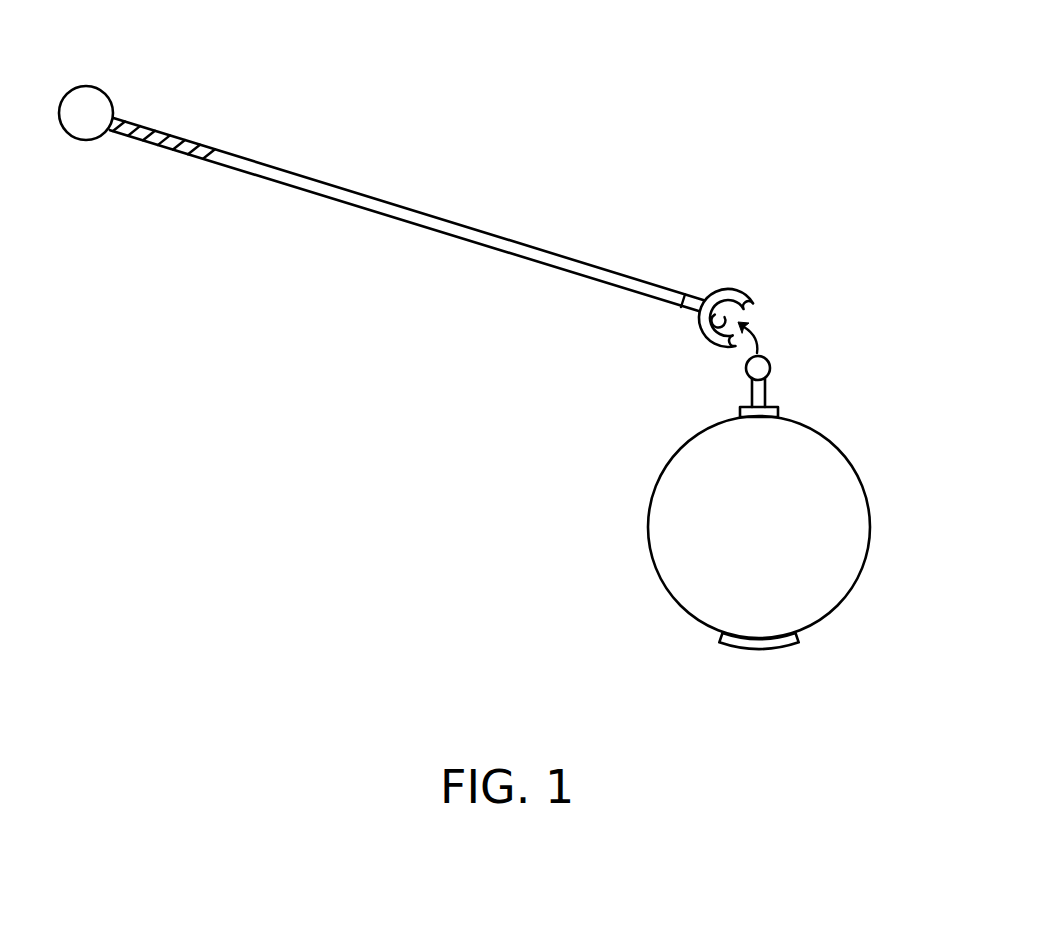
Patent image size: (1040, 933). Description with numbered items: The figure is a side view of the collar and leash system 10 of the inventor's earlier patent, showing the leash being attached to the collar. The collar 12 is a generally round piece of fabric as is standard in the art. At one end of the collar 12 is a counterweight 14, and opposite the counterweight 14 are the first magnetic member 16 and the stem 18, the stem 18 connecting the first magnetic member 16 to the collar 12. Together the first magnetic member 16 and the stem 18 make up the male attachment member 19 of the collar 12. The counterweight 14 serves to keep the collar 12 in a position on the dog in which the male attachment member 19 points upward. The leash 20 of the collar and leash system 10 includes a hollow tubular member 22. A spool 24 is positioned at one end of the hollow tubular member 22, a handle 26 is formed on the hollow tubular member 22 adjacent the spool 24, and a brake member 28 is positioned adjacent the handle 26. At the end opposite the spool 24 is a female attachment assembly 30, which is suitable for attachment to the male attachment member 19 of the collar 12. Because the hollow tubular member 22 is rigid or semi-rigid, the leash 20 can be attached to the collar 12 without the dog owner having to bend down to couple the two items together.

The collar and leash system 10 is at (634, 114).
The collar 12 is at (870, 497).
The counterweight 14 is at (790, 648).
The first magnetic member 16 is at (769, 364).
The stem 18 is at (767, 390).
The male attachment member 19 is at (726, 387).
The leash 20 is at (362, 192).
The hollow tubular member 22 is at (470, 227).
The spool 24 is at (72, 90).
The handle 26 is at (140, 137).
The brake member 28 is at (158, 124).
The female attachment assembly 30 is at (737, 290).